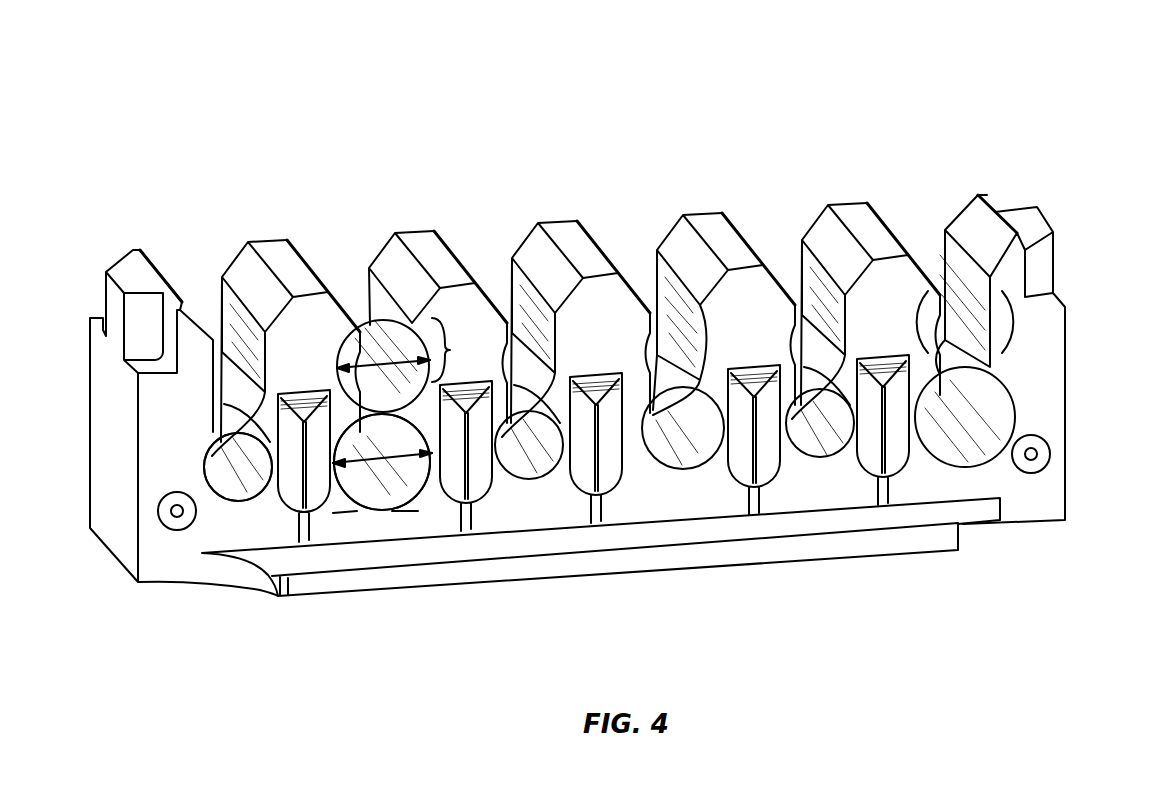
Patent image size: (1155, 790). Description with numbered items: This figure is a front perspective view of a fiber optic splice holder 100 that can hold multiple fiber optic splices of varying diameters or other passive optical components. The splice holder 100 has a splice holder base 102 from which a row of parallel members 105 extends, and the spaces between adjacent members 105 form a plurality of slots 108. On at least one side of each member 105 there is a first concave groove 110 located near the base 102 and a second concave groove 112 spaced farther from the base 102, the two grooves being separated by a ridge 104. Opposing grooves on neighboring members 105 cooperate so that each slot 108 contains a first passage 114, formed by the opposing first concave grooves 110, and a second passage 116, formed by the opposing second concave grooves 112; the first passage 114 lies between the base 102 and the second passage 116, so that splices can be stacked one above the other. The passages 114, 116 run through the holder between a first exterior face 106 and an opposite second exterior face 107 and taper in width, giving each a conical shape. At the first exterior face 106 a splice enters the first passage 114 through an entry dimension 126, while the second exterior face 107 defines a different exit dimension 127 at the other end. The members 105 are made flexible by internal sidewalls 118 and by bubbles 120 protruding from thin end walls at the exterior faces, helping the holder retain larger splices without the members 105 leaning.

The fiber optic splice holder 100 is at (925, 72).
The splice holder base 102 is at (902, 548).
The ridge 104 is at (356, 405).
The member 105 is at (283, 262).
The first exterior face 106 is at (173, 560).
The second exterior face 107 is at (70, 515).
The slot 108 is at (775, 222).
The first concave groove 110 is at (420, 407).
The second concave groove 112 is at (371, 330).
The first passage 114 is at (390, 515).
The second passage 116 is at (461, 350).
The internal sidewall 118 is at (963, 192).
The bubble 120 is at (776, 460).
The entry dimension 126 is at (424, 500).
The exit dimension 127 is at (310, 500).